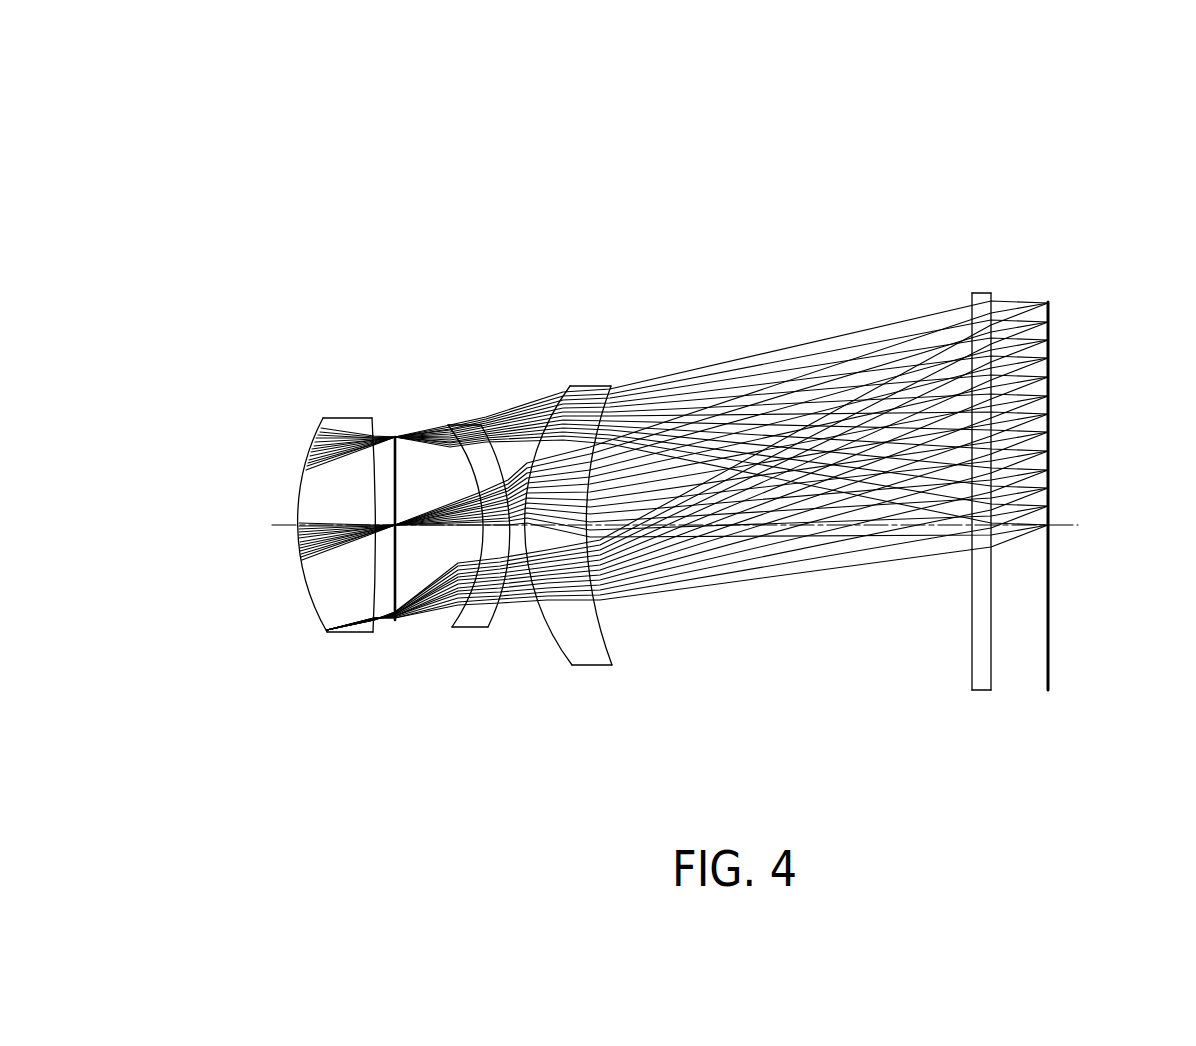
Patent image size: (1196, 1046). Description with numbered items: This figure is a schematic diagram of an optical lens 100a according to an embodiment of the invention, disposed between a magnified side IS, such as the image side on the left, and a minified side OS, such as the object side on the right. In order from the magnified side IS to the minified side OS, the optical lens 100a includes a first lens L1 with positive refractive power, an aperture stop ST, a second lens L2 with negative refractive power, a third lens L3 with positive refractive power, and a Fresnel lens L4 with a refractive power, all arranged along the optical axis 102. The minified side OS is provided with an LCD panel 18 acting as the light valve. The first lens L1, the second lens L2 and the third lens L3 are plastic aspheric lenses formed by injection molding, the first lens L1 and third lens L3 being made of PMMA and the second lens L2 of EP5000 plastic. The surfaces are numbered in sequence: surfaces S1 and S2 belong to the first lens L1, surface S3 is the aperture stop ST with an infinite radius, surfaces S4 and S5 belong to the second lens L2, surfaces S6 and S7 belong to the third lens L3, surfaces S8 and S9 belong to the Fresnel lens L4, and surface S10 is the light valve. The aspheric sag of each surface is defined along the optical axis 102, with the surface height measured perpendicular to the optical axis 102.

The optical lens 100a is at (238, 63).
The magnified side IS is at (264, 174).
The object side OS is at (1148, 174).
The first lens L1 is at (323, 496).
The second lens L2 is at (464, 511).
The third lens L3 is at (596, 493).
The Fresnel lens L4 is at (981, 455).
The aperture stop ST is at (390, 544).
The LCD panel (light valve) 18 is at (1096, 524).
The optical axis 102 is at (1060, 523).
The surface S1 is at (313, 605).
The surface S2 is at (378, 605).
The surface S3 is at (398, 622).
The surface S4 is at (450, 630).
The surface S5 is at (494, 632).
The surface S6 is at (548, 625).
The surface S7 is at (612, 630).
The surface S8 is at (972, 620).
The surface S9 is at (992, 607).
The surface S10 is at (1050, 622).